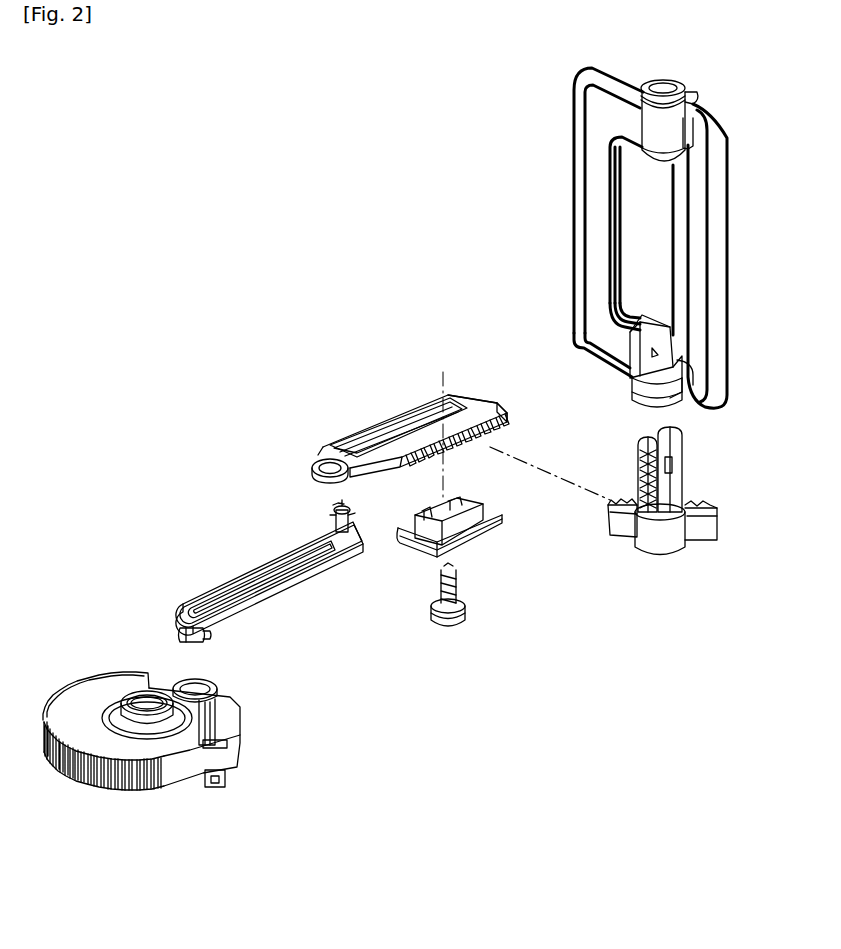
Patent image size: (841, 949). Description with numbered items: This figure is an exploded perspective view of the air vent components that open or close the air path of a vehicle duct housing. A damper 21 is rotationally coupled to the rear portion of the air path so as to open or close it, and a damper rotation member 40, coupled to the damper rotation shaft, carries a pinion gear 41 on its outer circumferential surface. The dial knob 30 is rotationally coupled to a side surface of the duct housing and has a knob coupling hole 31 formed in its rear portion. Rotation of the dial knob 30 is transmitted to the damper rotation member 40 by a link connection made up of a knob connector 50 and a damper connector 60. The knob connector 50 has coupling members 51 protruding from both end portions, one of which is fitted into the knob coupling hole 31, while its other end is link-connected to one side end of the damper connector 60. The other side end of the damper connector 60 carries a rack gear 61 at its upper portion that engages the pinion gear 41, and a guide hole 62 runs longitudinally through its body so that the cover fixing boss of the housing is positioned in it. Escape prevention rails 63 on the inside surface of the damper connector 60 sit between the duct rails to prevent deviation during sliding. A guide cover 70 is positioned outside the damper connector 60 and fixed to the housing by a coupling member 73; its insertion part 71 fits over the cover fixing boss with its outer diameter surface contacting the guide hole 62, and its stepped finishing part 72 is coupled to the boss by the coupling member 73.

The damper 21 is at (593, 297).
The dial knob 30 is at (141, 694).
The knob coupling hole 31 is at (195, 690).
The damper rotation member 40 is at (658, 535).
The pinion gear 41 is at (627, 493).
The knob connector 50 is at (270, 579).
The coupling members 51 is at (333, 543).
The damper connector 60 is at (409, 396).
The rack gear 61 is at (510, 410).
The guide hole 62 is at (427, 403).
The escape prevention rails 63 is at (458, 408).
The guide cover 70 is at (482, 580).
The insertion part 71 is at (493, 507).
The finishing part 72 is at (412, 550).
The coupling member 73 is at (466, 621).